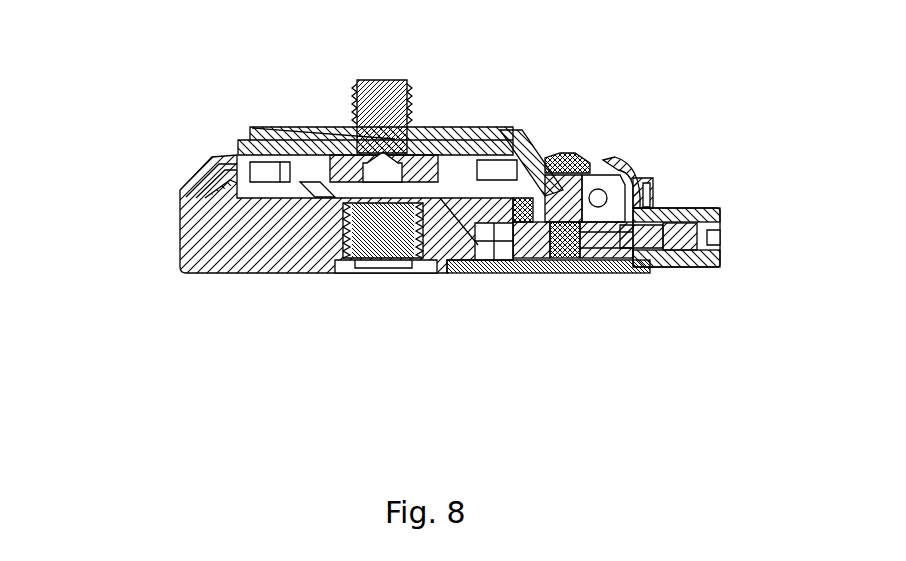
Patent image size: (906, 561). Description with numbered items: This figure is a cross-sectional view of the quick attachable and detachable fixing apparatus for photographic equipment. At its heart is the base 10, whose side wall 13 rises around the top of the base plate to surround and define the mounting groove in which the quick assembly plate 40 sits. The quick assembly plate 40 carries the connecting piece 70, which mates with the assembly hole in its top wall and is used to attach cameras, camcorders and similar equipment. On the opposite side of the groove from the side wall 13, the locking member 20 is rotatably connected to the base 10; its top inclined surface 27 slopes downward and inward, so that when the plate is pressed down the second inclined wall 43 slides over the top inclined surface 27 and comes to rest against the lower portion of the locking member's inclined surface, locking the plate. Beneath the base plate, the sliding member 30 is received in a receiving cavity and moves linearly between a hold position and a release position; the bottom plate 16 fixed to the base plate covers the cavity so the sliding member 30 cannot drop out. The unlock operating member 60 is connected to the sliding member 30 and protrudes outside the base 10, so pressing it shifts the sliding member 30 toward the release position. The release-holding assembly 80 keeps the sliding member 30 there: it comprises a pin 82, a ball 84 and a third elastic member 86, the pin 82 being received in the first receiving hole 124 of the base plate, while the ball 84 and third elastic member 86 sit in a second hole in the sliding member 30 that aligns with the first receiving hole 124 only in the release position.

The base 10 is at (200, 273).
The side wall 13 is at (213, 153).
The bottom plate 16 is at (455, 275).
The locking member 20 is at (640, 180).
The top inclined surface 27 is at (585, 175).
The sliding member 30 is at (523, 272).
The quick assembly plate 40 is at (443, 128).
The second inclined wall 43 is at (550, 153).
The unlock operating member 60 is at (710, 270).
The connecting piece 70 is at (403, 80).
The release-holding assembly 80 is at (594, 332).
The pin 82 is at (545, 270).
The ball 84 is at (627, 294).
The third elastic member 86 is at (575, 270).
The first receiving hole 124 is at (640, 160).